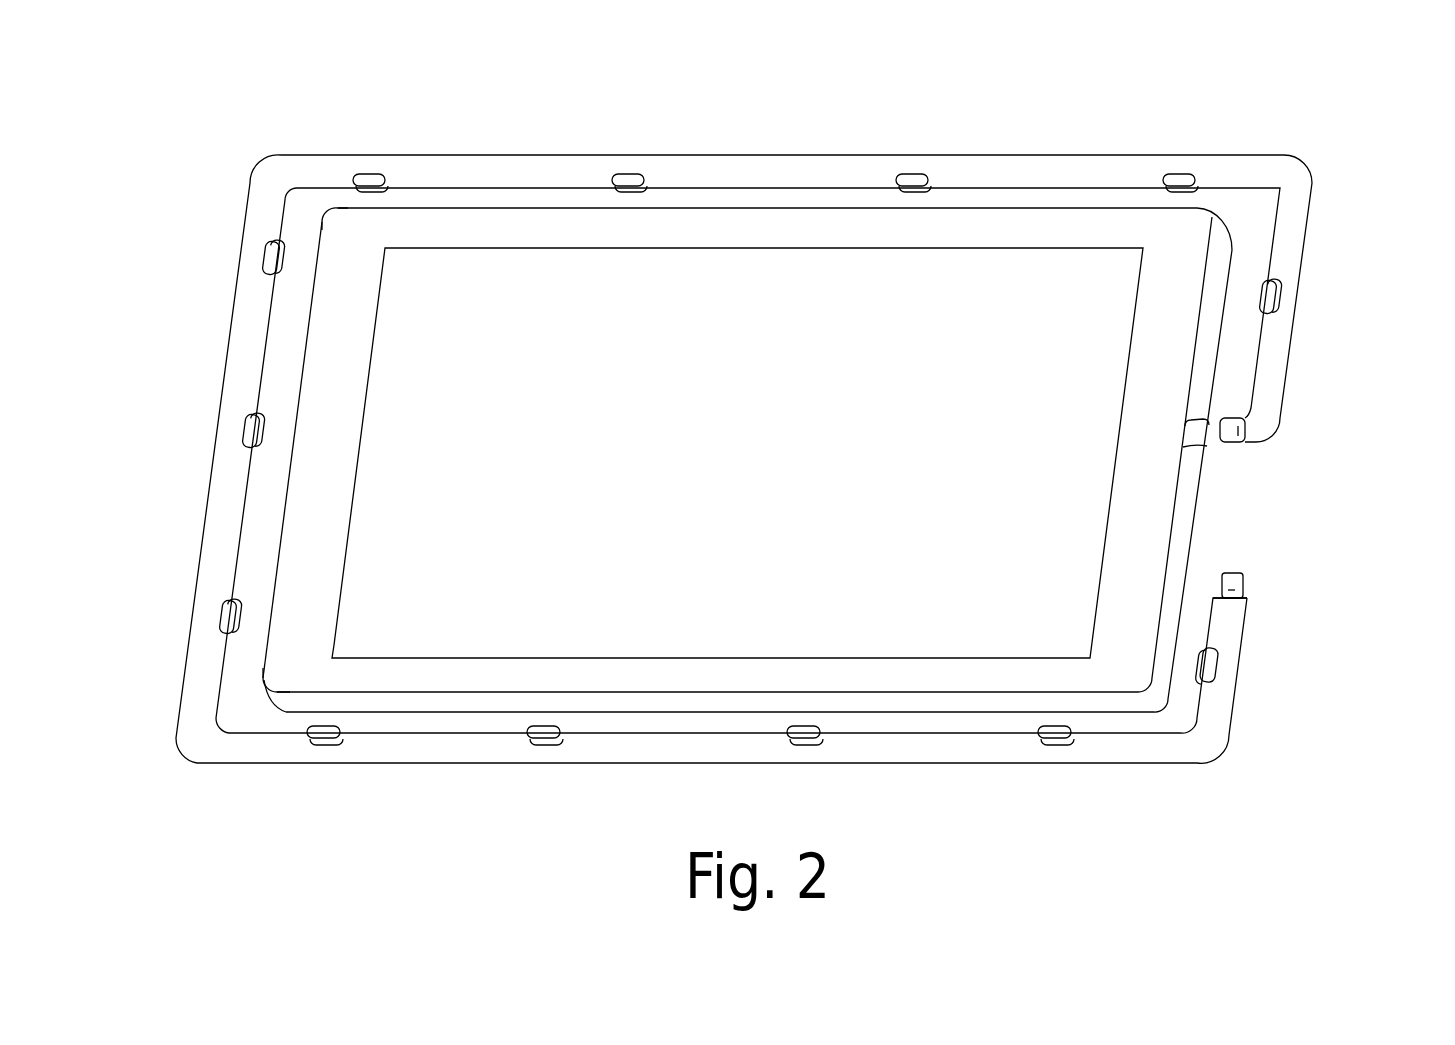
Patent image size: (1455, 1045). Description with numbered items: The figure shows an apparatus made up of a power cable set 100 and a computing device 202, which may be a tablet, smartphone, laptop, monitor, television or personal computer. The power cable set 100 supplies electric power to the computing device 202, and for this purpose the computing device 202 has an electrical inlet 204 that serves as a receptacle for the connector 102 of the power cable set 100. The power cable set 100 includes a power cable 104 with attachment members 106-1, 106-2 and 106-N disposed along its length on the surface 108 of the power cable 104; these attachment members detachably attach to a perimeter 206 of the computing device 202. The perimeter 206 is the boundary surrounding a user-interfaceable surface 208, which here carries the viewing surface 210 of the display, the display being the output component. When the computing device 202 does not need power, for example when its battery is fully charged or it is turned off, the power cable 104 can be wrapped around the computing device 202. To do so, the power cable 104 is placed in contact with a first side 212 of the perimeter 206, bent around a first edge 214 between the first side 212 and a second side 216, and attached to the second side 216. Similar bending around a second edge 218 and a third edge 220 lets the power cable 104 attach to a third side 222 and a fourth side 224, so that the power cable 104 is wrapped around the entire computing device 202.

The power cable set 100 is at (768, 463).
The connector 102 is at (1302, 463).
The power cable 104 is at (813, 459).
The attachment member 106-1 is at (1356, 266).
The attachment member 106-2 is at (1108, 157).
The attachment member 106-N is at (1317, 661).
The surface of the power cable 108 is at (782, 113).
The computing device 202 is at (705, 460).
The electrical inlet 204 is at (1257, 485).
The perimeter 206 is at (1255, 454).
The user-interfaceable surface 208 is at (837, 453).
The viewing surface 210 is at (228, 741).
The first side 212 is at (1283, 481).
The first edge 214 is at (1323, 191).
The second side 216 is at (737, 405).
The second edge 218 is at (265, 172).
The third edge 220 is at (186, 729).
The third side 222 is at (210, 450).
The fourth side 224 is at (720, 784).